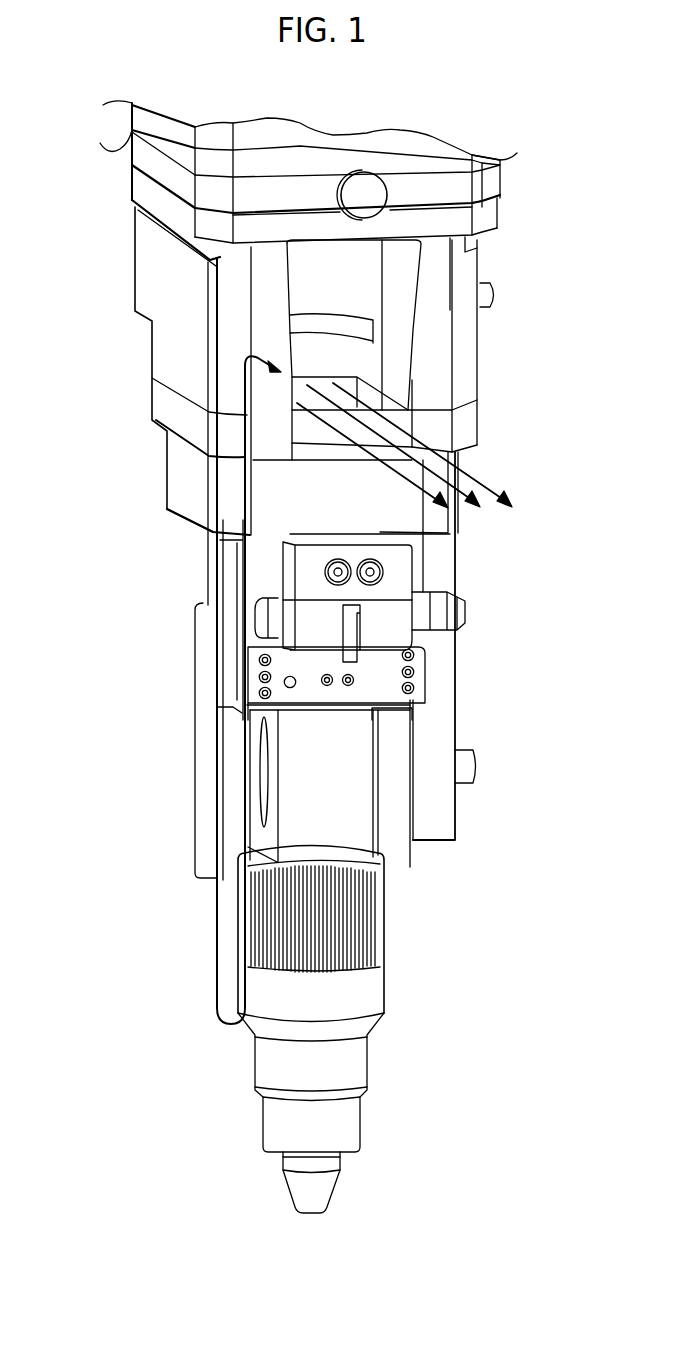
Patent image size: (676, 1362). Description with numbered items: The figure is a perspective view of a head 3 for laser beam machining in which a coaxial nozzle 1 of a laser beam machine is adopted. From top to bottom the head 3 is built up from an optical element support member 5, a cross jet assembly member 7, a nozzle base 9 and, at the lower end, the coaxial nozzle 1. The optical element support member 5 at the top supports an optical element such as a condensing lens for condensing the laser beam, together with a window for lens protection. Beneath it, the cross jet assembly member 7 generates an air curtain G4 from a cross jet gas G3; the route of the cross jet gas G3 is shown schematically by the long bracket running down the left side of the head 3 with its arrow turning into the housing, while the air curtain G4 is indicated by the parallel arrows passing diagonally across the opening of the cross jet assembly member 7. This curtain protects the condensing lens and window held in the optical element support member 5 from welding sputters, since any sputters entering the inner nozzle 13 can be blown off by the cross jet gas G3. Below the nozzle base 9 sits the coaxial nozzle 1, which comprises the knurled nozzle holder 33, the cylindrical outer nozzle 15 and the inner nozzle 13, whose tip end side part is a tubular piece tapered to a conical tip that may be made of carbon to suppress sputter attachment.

The coaxial nozzle 1 is at (372, 1058).
The head for a laser beam machining 3 is at (548, 445).
The optical element support member 5 is at (131, 147).
The cross jet assembly member 7 is at (152, 347).
The nozzle base 9 is at (226, 644).
The inner nozzle 13 is at (337, 1183).
The outer nozzle 15 is at (348, 1118).
The nozzle holder 33 is at (400, 913).
The cross jet gas G3 is at (209, 486).
The air curtain G4 is at (397, 420).